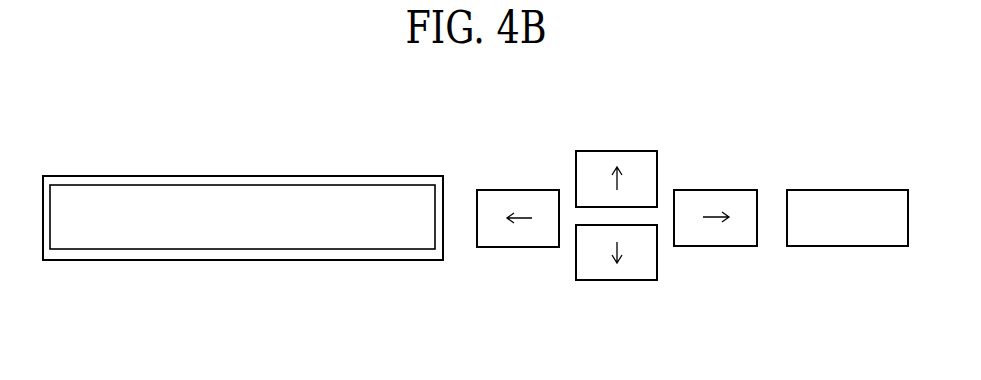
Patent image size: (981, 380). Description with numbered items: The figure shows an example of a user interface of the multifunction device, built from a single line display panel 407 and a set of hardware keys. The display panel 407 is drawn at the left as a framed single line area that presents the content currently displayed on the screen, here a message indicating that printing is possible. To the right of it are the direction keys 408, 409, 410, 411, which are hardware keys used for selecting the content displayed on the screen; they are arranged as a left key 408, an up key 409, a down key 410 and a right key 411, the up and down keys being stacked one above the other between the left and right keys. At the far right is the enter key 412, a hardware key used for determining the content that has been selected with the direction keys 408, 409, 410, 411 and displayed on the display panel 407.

The display panel 407 is at (265, 176).
The direction key 408 is at (517, 190).
The direction key 409 is at (617, 151).
The direction key 410 is at (617, 281).
The direction key 411 is at (713, 190).
The enter key 412 is at (848, 190).